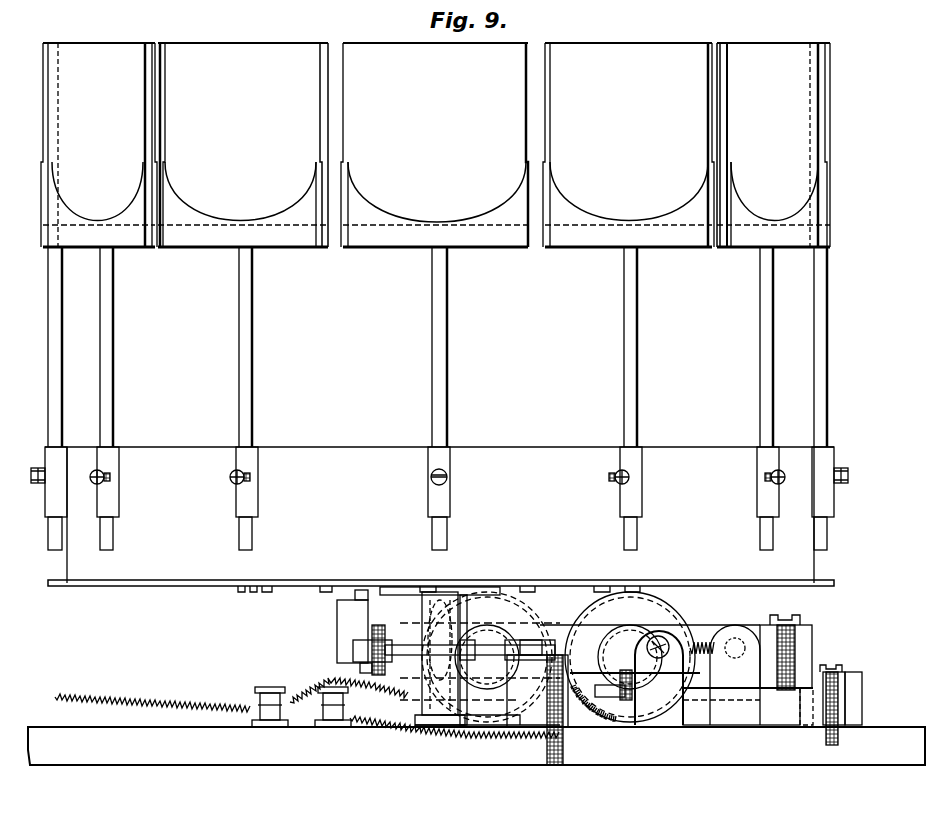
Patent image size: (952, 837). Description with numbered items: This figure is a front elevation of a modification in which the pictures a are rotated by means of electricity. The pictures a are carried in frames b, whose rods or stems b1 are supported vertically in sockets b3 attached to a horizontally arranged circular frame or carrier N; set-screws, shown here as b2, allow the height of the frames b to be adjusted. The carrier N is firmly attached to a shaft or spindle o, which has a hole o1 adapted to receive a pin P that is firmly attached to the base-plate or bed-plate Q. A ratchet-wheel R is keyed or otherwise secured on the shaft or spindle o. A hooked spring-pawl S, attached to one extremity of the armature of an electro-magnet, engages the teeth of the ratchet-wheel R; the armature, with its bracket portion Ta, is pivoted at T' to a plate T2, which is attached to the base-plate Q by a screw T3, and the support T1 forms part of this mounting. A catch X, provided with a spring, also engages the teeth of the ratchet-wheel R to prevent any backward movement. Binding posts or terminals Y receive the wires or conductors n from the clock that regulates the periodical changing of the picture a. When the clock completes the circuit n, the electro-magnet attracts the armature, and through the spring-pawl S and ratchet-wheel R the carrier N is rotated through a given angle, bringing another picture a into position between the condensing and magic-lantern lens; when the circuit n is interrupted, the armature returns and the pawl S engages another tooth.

The picture a is at (435, 145).
The frame b is at (437, 204).
The rod or stem b1 is at (832, 336).
The set screw b2 is at (848, 474).
The socket b3 is at (778, 458).
The circular frame or carrier N is at (439, 516).
The wires or conductors n is at (632, 570).
The binding post or terminal Y is at (322, 672).
The base-plate or bed-plate Q is at (476, 746).
The bracket Ta is at (354, 631).
The hooked spring-pawl S is at (454, 650).
The shaft or spindle o is at (425, 608).
The hole o1 is at (463, 608).
The ratchet-wheel R is at (480, 657).
The catch X is at (537, 702).
The pin P is at (482, 710).
The pivot T' is at (650, 658).
The pillar T1 is at (800, 620).
The plate T2 is at (748, 706).
The screw T3 is at (840, 670).